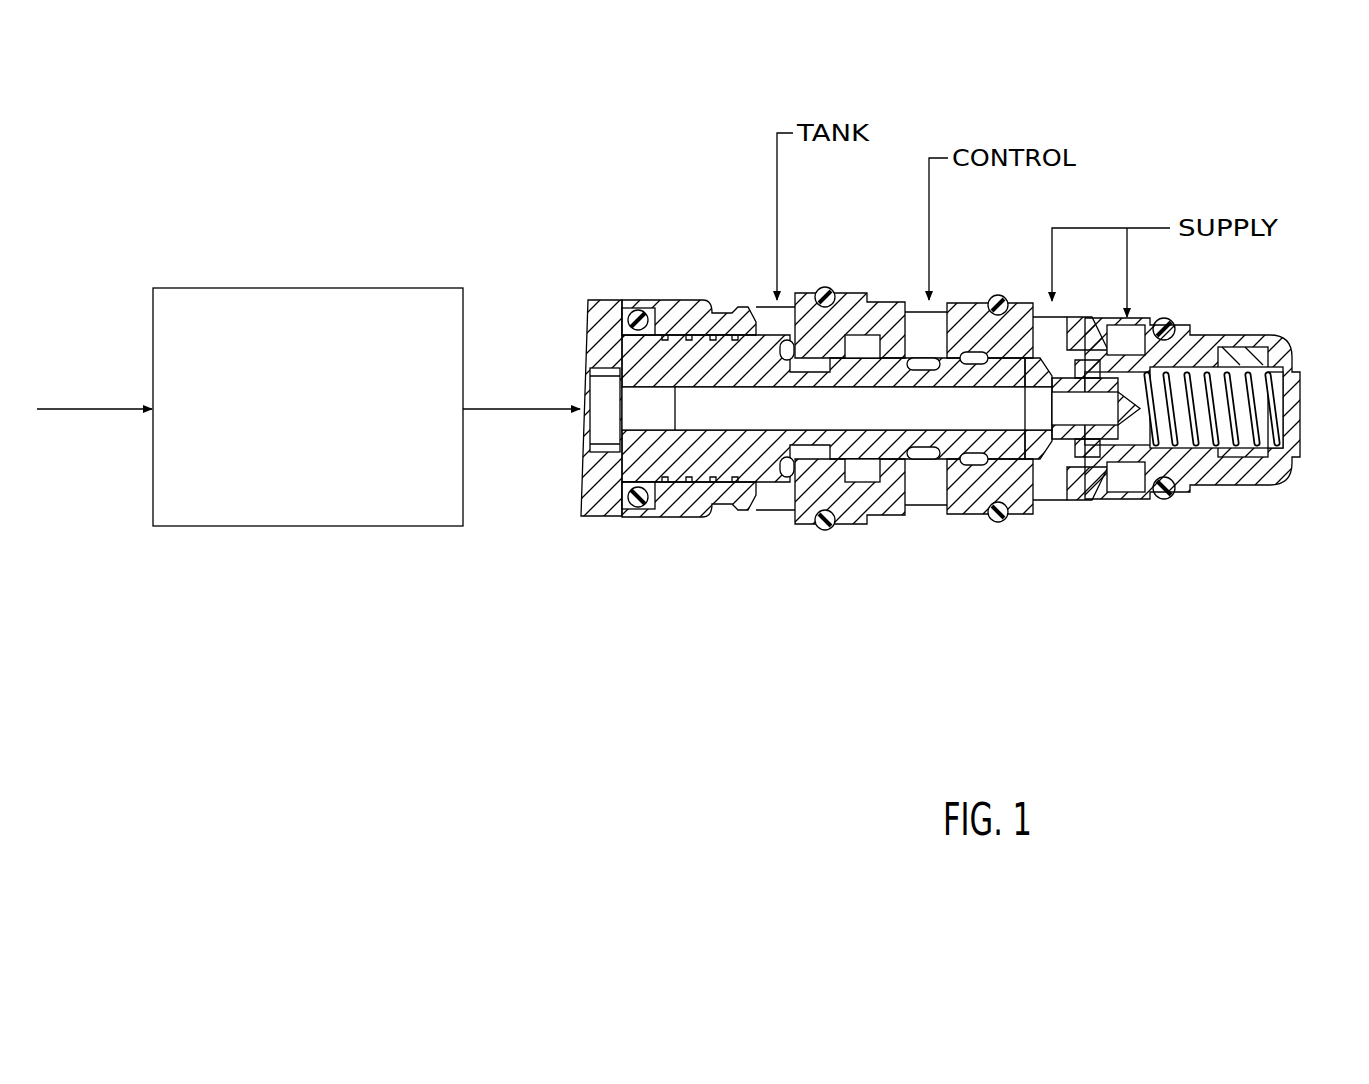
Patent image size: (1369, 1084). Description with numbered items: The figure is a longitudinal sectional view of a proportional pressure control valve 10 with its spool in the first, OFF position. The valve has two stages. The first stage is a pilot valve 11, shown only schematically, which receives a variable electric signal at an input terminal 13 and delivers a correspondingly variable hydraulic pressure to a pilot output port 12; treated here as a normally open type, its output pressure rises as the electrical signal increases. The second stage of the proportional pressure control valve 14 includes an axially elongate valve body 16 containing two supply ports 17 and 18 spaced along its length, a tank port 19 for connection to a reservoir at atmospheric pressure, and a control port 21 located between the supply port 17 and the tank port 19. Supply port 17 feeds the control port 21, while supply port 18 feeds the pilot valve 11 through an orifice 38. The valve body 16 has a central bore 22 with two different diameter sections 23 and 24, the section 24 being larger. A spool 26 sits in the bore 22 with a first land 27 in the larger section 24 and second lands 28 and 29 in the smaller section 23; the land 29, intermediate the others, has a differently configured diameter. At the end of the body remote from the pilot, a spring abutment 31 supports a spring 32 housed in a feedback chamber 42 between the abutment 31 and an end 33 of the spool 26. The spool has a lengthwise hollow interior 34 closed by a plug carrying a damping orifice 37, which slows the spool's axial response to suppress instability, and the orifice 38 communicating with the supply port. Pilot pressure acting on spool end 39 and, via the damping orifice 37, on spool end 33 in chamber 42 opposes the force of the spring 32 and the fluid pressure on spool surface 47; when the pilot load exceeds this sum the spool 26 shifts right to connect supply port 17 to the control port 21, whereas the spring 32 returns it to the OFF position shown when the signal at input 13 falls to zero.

The proportional pressure control valve 10 is at (672, 210).
The pilot valve 11 is at (327, 286).
The pilot output port 12 is at (583, 430).
The input terminal 13 is at (98, 405).
The second stage of the proportional pressure control valve 14 is at (850, 527).
The valve body 16 is at (970, 515).
The supply port 17 is at (1047, 498).
The supply port 18 is at (1126, 505).
The tank port 19 is at (770, 500).
The control port 21 is at (908, 503).
The central bore 22 is at (977, 332).
The bore diameter section 23 is at (900, 310).
The bore diameter section 24 is at (682, 478).
The spool 26 is at (665, 458).
The first land 27 is at (753, 310).
The second land 28 is at (1036, 335).
The second land 29 is at (858, 304).
The spring abutment 31 is at (1300, 420).
The spring 32 is at (1244, 462).
The end of the spool 33 is at (1236, 334).
The hollow interior 34 is at (1000, 505).
The damping orifice 37 is at (1187, 472).
The orifice 38 is at (1092, 470).
The spool end 39 is at (592, 345).
The feedback chamber 42 is at (1280, 345).
The spool surface 47 is at (818, 512).